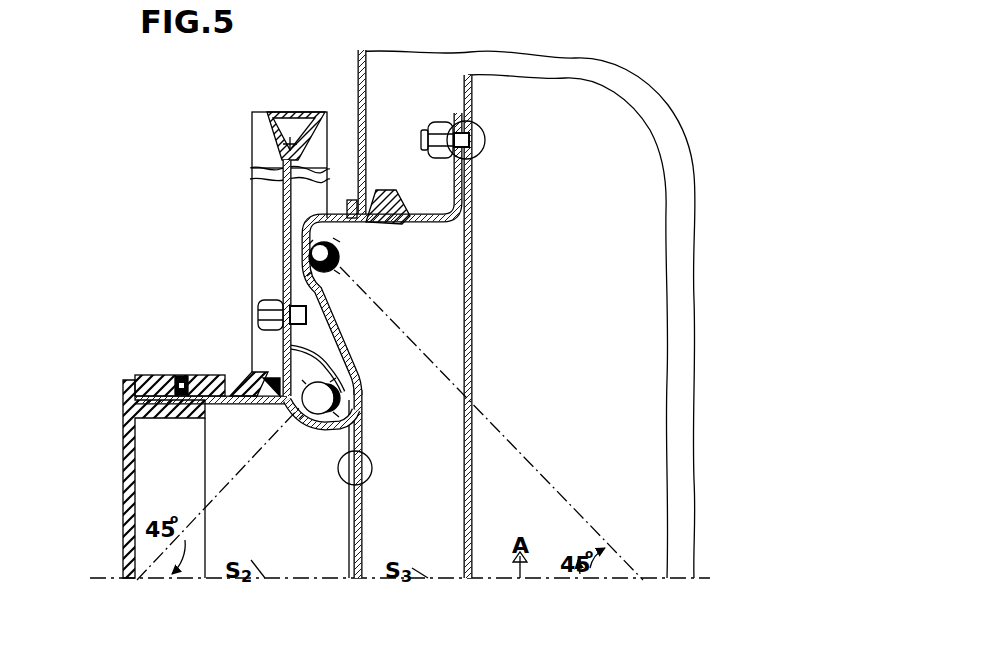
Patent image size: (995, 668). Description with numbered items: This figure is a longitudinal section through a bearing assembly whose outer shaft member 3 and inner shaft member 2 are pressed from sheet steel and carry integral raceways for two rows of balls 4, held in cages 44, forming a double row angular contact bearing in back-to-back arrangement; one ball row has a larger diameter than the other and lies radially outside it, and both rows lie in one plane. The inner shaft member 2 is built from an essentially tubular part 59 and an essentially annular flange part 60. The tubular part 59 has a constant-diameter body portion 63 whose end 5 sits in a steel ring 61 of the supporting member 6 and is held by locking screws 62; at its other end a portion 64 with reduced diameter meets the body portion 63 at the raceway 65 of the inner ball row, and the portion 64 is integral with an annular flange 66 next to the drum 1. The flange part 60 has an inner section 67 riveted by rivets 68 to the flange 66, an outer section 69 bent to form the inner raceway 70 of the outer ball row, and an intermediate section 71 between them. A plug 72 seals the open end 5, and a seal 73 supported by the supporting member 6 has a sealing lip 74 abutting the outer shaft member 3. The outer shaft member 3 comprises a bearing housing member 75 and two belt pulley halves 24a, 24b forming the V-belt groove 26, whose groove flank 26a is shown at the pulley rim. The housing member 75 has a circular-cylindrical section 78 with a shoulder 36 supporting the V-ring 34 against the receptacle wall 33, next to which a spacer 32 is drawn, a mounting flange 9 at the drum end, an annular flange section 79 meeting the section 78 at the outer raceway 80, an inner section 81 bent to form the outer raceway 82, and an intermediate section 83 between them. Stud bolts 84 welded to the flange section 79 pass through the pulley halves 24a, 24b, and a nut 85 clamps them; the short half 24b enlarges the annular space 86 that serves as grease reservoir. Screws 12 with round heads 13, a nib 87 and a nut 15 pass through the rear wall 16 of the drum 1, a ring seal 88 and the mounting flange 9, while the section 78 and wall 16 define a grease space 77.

The drum 1 is at (666, 442).
The inner shaft member 2 is at (366, 491).
The outer shaft member 3 is at (411, 229).
The balls 4 is at (320, 264).
The end of body portion 5 is at (132, 400).
The supporting member 6 is at (128, 375).
The mounting flange 9 is at (456, 183).
The screws 12 is at (464, 144).
The round head 13 is at (486, 140).
The nut 15 is at (440, 128).
The rear wall of drum 16 is at (473, 197).
The belt pulley half 24a is at (283, 161).
The belt pulley half 24b is at (283, 193).
The V-belt groove 26 is at (290, 118).
The notch 26a is at (270, 113).
The spacer 32 is at (356, 212).
The receptacle wall 33 is at (358, 74).
The V-ring 34 is at (378, 191).
The shoulder 36 is at (411, 190).
The cages 44 is at (338, 245).
The essentially tubular part 59 is at (245, 403).
The essentially annular flange part 60 is at (363, 382).
The steel ring 61 is at (132, 381).
The locking screws 62 is at (179, 377).
The body portion 63 is at (213, 403).
The portion with reduced diameter 64 is at (332, 429).
The raceway 65 is at (300, 412).
The annular flange 66 is at (348, 481).
The inner section 67 is at (362, 441).
The rivets 68 is at (371, 478).
The outer section 69 is at (355, 309).
The inner raceway 70 is at (340, 267).
The intermediate section 71 is at (346, 332).
The plug 72 is at (121, 438).
The seal 73 is at (241, 381).
The sealing lip 74 is at (270, 380).
The bearing housing member 75 is at (462, 226).
The space 77 is at (445, 279).
The essentially circular-cylindrical section 78 is at (373, 224).
The annular flange section 79 is at (283, 258).
The outer raceway 80 is at (283, 218).
The inner section 81 is at (368, 408).
The outer raceway 82 is at (366, 394).
The intermediate section 83 is at (300, 360).
The stud bolts 84 is at (280, 290).
The nut 85 is at (290, 318).
The annular space 86 is at (390, 423).
The nib 87 is at (478, 127).
The ring seal 88 is at (456, 115).